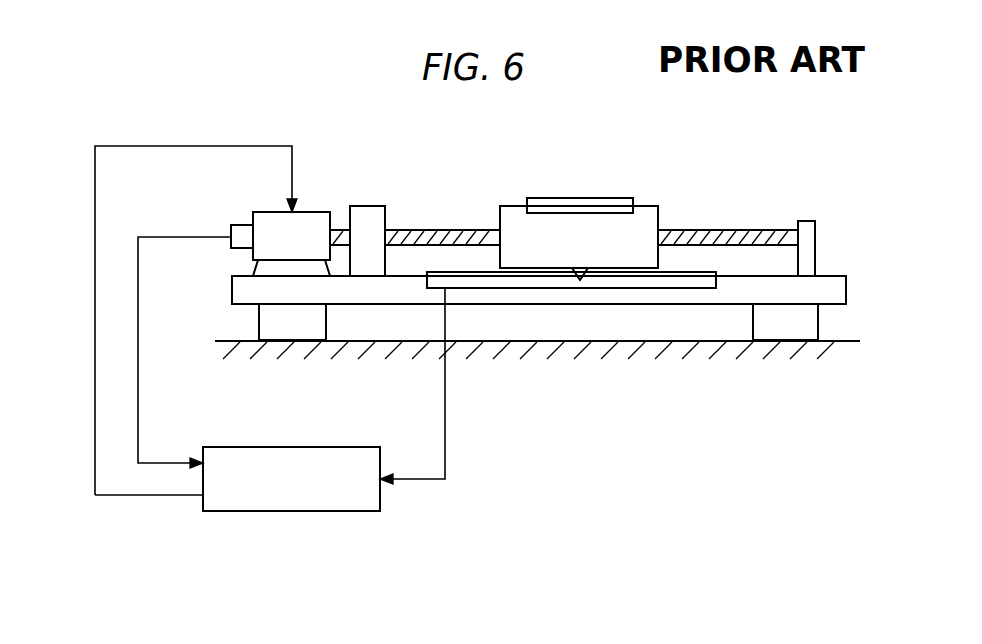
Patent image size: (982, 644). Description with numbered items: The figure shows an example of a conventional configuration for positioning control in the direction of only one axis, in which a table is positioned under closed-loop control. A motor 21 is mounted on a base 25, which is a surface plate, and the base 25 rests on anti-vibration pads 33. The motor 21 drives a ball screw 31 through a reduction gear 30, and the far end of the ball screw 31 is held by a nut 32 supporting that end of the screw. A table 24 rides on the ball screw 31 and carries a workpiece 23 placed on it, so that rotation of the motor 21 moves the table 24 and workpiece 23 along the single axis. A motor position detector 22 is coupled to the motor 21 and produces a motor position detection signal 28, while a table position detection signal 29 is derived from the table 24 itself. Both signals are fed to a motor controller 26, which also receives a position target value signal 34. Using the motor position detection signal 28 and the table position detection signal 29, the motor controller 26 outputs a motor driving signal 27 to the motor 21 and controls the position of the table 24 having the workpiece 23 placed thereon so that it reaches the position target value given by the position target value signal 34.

The motor 21 is at (312, 212).
The motor position detector 22 is at (242, 225).
The workpiece 23 is at (580, 198).
The table 24 is at (644, 206).
The base 25 is at (846, 291).
The motor controller 26 is at (290, 447).
The motor driving signal 27 is at (95, 393).
The motor position detection signal 28 is at (138, 393).
The table position detection signal 29 is at (445, 430).
The reduction gear 30 is at (366, 206).
The ball screw 31 is at (726, 229).
The nut supporting an end of the ball screw 32 is at (806, 221).
The anti-vibration pad 33 is at (259, 320).
The position target value signal 34 is at (300, 533).